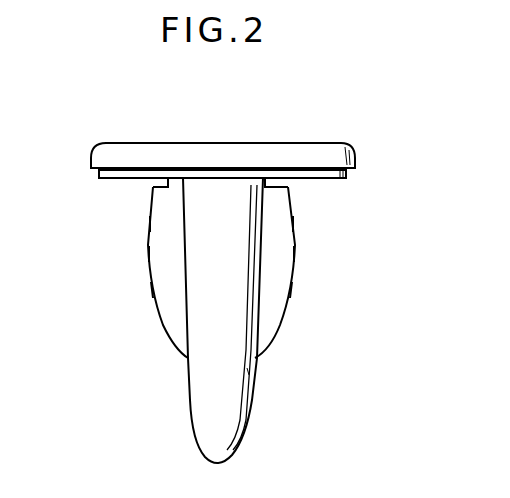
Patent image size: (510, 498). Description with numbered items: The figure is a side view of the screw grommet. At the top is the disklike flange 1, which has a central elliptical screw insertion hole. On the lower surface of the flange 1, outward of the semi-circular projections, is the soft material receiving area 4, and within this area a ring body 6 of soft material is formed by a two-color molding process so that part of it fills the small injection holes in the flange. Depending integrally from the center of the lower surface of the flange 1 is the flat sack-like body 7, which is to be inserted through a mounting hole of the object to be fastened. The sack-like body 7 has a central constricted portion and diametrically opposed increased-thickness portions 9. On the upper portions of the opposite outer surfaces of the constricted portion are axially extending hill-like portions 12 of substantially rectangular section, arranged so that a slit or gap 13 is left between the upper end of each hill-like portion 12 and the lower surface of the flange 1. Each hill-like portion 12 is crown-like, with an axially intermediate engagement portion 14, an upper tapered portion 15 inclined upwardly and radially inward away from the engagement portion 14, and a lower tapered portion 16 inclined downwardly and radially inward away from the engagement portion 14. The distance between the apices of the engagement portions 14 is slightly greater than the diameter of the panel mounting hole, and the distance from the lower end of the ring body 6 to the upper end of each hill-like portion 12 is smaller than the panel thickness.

The disklike flange 1 is at (315, 143).
The soft material receiving area 4 is at (323, 179).
The ring body 6 is at (114, 180).
The flat sack-like body 7 is at (205, 428).
The increased-thickness portions 9 is at (245, 415).
The hill-like portions 12 is at (170, 318).
The slit or gap 13 is at (170, 180).
The engagement portion 14 is at (148, 250).
The upper tapered portion 15 is at (148, 220).
The lower tapered portion 16 is at (150, 288).